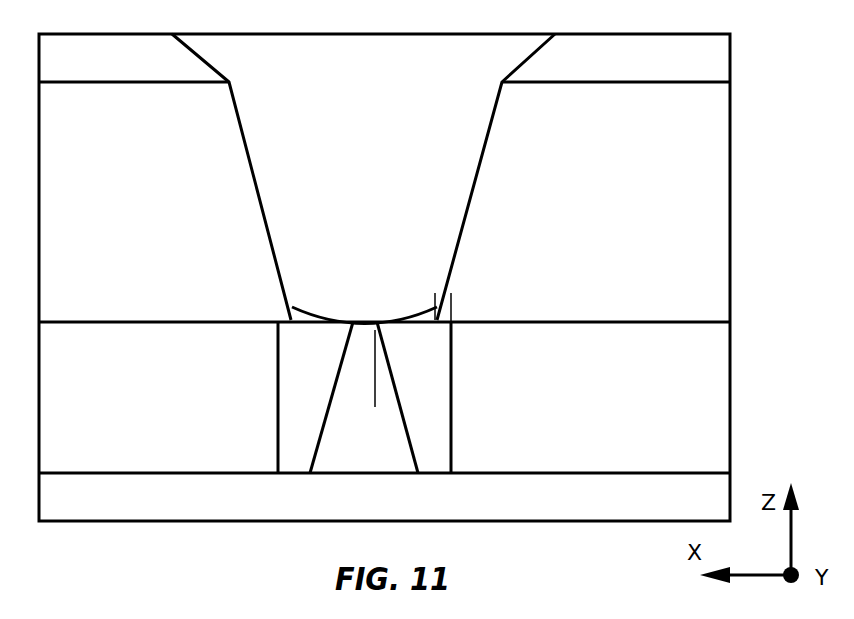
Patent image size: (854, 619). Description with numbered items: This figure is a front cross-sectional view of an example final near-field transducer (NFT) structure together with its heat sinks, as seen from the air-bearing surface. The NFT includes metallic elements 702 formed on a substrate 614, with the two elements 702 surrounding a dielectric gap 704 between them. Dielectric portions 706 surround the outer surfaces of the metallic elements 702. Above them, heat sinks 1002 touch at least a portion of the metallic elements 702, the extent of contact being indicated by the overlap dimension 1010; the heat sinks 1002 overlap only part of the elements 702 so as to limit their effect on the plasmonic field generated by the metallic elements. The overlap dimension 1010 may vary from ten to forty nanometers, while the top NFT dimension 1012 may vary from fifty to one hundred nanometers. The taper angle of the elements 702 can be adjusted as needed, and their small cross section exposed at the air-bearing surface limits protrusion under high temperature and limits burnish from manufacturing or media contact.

The heat sink 1002 is at (173, 218).
The dielectric portion 706 is at (175, 416).
The metallic element 702 is at (323, 371).
The dielectric gap 704 is at (382, 449).
The substrate 614 is at (384, 497).
The overlap dimension 1010 is at (402, 302).
The top NFT dimension 1012 is at (382, 398).